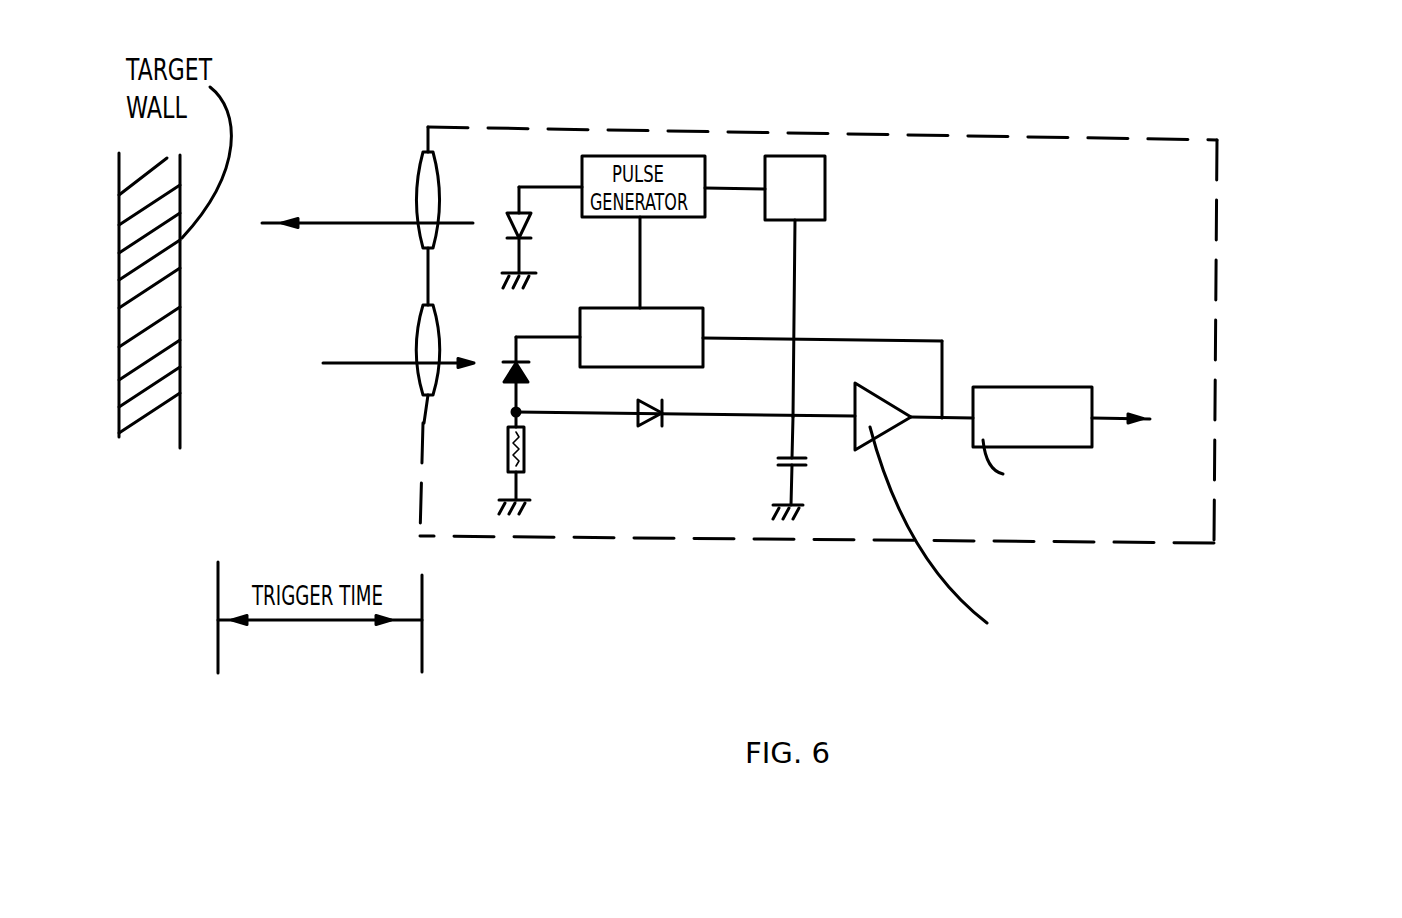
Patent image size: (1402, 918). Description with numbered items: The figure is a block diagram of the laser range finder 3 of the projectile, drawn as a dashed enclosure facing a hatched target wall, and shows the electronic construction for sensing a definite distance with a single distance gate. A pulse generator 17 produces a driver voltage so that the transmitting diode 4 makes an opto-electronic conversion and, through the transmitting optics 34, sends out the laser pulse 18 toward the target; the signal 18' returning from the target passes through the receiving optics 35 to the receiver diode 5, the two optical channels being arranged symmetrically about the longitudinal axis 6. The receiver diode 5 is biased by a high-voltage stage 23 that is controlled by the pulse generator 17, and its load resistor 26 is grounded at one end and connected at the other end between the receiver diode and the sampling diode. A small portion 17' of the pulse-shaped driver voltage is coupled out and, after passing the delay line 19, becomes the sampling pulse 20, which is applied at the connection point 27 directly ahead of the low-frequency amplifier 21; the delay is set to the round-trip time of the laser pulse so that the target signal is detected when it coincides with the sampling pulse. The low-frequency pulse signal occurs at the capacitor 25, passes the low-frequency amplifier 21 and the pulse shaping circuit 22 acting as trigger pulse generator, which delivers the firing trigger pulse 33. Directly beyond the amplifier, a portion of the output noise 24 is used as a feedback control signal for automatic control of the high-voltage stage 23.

The laser range finder 3 is at (1217, 358).
The transmitting diode 4 is at (518, 213).
The receiver diode 5 is at (504, 379).
The longitudinal axis 6 is at (653, 423).
The pulse generator 17 is at (560, 128).
The portion of the pulse-shaped driver voltage 17' is at (744, 122).
The laser pulse 18 is at (367, 199).
The target signal 18' is at (398, 331).
The delay line 19 is at (828, 156).
The sampling pulse 20 is at (818, 415).
The low-frequency amplifier 21 is at (870, 392).
The pulse shaping circuit 22 is at (1040, 386).
The high-voltage stage 23 is at (659, 308).
The output noise 24 is at (943, 373).
The capacitor 25 is at (803, 465).
The load resistor 26 is at (504, 453).
The connection point 27 is at (666, 512).
The firing trigger pulse 33 is at (1147, 418).
The transmitting optics 34 is at (428, 150).
The receiving optics 35 is at (413, 395).